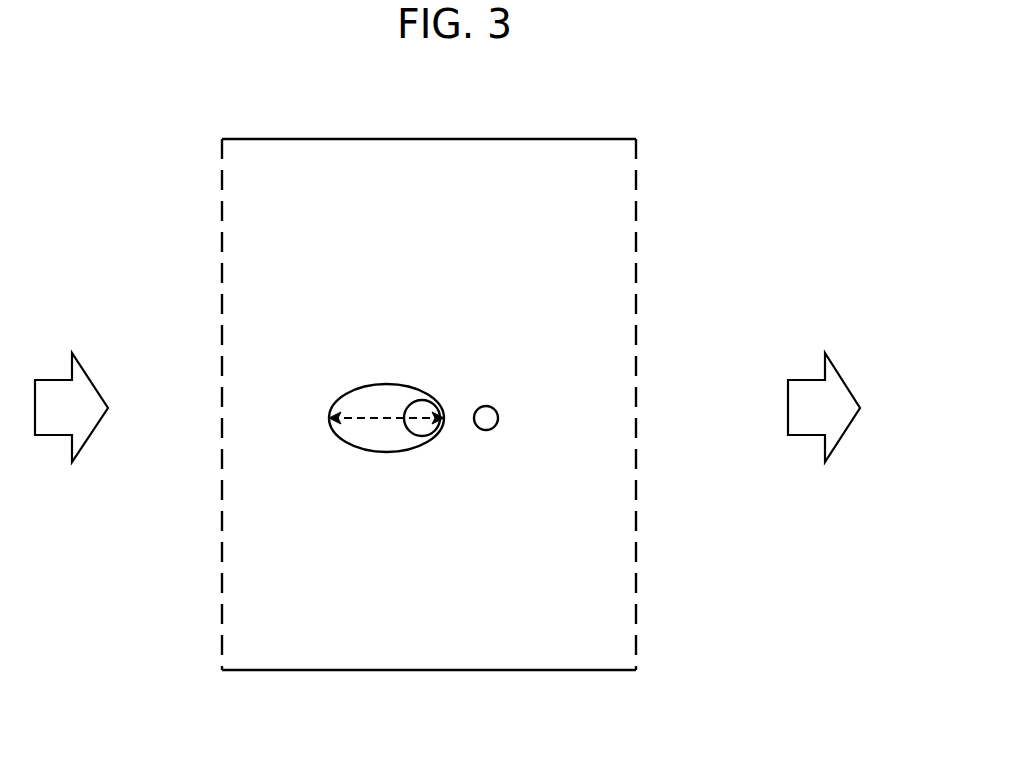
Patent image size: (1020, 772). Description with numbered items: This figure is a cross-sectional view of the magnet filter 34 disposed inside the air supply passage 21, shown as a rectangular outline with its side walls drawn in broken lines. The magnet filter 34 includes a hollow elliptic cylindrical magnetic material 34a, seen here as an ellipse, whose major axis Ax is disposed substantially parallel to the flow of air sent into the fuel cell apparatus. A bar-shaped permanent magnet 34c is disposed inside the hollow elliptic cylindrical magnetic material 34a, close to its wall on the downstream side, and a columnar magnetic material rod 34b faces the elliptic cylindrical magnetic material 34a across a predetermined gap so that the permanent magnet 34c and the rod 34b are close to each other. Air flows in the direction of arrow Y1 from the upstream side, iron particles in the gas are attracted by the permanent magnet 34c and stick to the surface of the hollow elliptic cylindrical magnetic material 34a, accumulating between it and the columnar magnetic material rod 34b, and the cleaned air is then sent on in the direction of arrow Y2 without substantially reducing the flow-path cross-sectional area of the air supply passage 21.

The air supply passage 21 is at (551, 139).
The magnet filter 34 is at (533, 308).
The hollow elliptic cylindrical magnetic material 34a is at (401, 384).
The columnar magnetic material rod 34b is at (490, 406).
The permanent magnet 34c is at (429, 404).
The major axis Ax is at (353, 417).
The arrow Y1 is at (87, 382).
The arrow Y2 is at (842, 382).